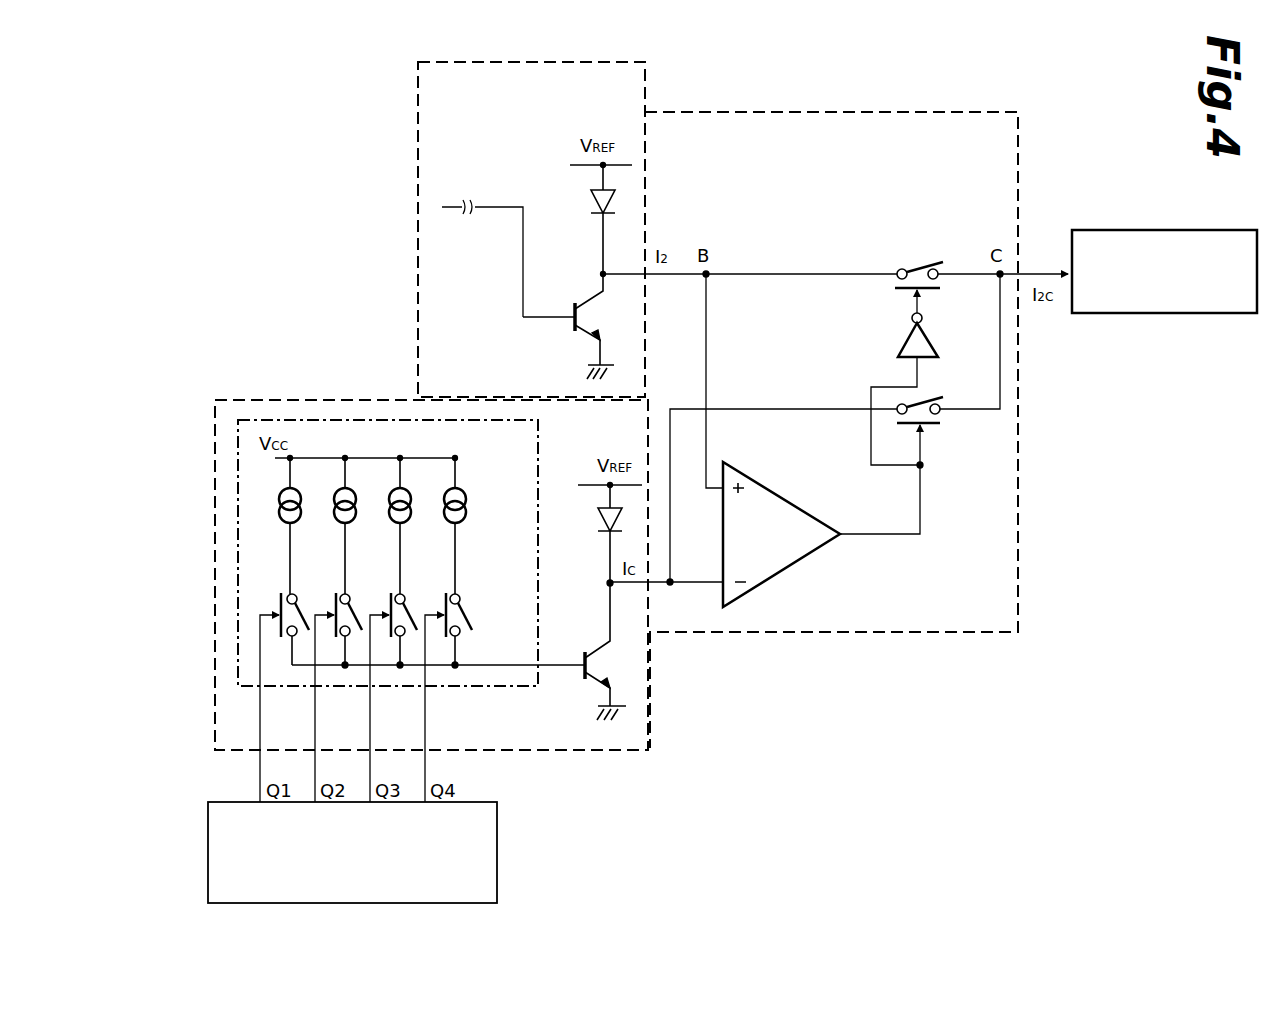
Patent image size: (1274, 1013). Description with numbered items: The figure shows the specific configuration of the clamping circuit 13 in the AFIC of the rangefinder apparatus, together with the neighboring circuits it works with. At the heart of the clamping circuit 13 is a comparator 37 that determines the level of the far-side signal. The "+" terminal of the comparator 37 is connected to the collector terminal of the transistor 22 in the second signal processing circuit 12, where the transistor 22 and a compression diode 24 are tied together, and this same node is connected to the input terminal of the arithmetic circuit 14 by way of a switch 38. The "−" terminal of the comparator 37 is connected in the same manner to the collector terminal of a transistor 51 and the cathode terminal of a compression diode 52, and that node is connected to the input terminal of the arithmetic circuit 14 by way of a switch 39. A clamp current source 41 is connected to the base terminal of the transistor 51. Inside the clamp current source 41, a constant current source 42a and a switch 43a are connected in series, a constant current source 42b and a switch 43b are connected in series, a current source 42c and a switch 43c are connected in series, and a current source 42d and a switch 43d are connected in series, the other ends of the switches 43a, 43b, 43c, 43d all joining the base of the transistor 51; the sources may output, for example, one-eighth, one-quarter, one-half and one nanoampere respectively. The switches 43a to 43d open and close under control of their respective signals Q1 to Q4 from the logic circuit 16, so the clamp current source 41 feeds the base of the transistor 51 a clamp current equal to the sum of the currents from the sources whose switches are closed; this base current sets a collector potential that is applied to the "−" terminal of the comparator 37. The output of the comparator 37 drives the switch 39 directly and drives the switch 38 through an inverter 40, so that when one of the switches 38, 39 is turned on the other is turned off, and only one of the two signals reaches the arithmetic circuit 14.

The second signal processing circuit 12 is at (417, 108).
The clamping circuit 13 is at (652, 716).
The arithmetic circuit 14 is at (1143, 230).
The logic circuit 16 is at (497, 848).
The transistor 22 is at (573, 326).
The compression diode 24 is at (600, 202).
The comparator 37 is at (803, 557).
The switch 38 is at (920, 268).
The switch 39 is at (938, 428).
The inverter 40 is at (897, 338).
The clamp current source 41 is at (237, 541).
The constant current source 42a is at (318, 483).
The constant current source 42b is at (373, 483).
The current source 42c is at (428, 483).
The current source 42d is at (483, 483).
The switch 43a is at (306, 608).
The switch 43b is at (361, 608).
The switch 43c is at (416, 608).
The switch 43d is at (471, 608).
The transistor 51 is at (583, 678).
The compression diode 52 is at (601, 518).